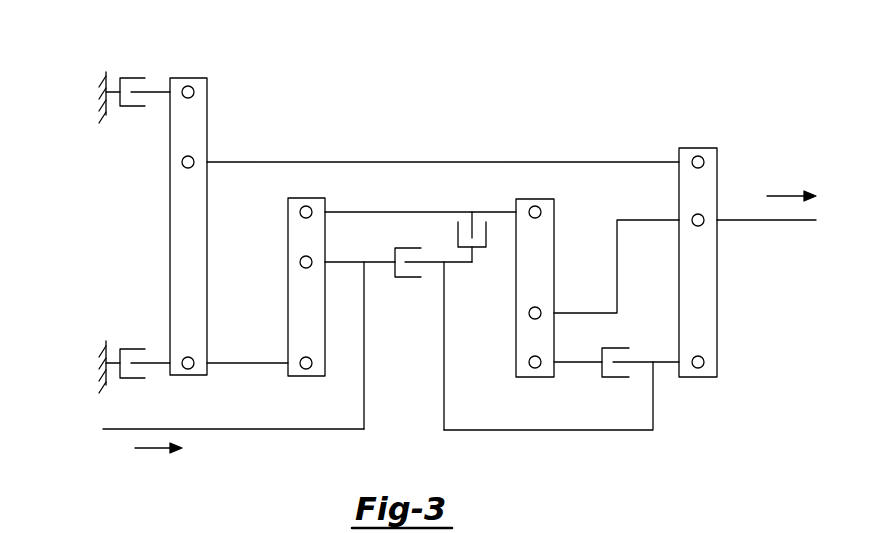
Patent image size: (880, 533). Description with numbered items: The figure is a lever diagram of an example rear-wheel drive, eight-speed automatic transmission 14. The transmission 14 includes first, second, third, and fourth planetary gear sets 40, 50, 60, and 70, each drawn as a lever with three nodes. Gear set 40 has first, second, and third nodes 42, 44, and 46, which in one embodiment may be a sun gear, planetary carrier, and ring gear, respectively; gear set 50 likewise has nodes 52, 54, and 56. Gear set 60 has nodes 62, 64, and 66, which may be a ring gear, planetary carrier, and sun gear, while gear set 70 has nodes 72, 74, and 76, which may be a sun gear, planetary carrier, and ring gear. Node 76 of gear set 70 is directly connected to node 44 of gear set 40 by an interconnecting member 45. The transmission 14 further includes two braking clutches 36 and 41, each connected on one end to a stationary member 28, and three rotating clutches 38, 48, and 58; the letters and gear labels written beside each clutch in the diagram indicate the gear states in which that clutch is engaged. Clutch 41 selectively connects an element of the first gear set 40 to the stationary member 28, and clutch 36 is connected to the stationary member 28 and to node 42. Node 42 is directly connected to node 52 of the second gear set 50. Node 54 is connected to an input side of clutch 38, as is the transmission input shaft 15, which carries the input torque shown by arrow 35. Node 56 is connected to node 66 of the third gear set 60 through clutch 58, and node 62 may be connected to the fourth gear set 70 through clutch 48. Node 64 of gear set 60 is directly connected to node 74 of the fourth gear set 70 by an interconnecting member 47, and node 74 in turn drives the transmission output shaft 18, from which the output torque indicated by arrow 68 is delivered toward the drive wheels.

The transmission 14 is at (600, 104).
The transmission input shaft 15 is at (299, 430).
The transmission output shaft 18 is at (799, 222).
The stationary member 28 is at (100, 92).
The input torque arrow 35 is at (146, 449).
The braking clutch CB1278R 36 is at (152, 328).
The rotating clutch C13567 38 is at (405, 316).
The first planetary gear set 40 is at (170, 227).
The braking clutch CB12345R 41 is at (156, 56).
The first node of first gear set 42 is at (189, 370).
The second node of first gear set 44 is at (182, 162).
The interconnecting member 45 is at (381, 162).
The third node of first gear set 46 is at (188, 86).
The interconnecting member 47 is at (646, 220).
The rotating clutch C45678R 48 is at (620, 396).
The second planetary gear set 50 is at (288, 305).
The node of second gear set 52 is at (306, 370).
The node of second gear set 54 is at (300, 262).
The node of second gear set 56 is at (300, 212).
The rotating clutch C23468 58 is at (500, 222).
The third planetary gear set 60 is at (554, 260).
The node of third gear set 62 is at (537, 369).
The node of third gear set 64 is at (532, 319).
The node of third gear set 66 is at (538, 206).
The output torque arrow 68 is at (791, 189).
The fourth planetary gear set 70 is at (718, 288).
The node of fourth gear set 72 is at (699, 369).
The node of fourth gear set 74 is at (697, 228).
The node of fourth gear set 76 is at (700, 156).